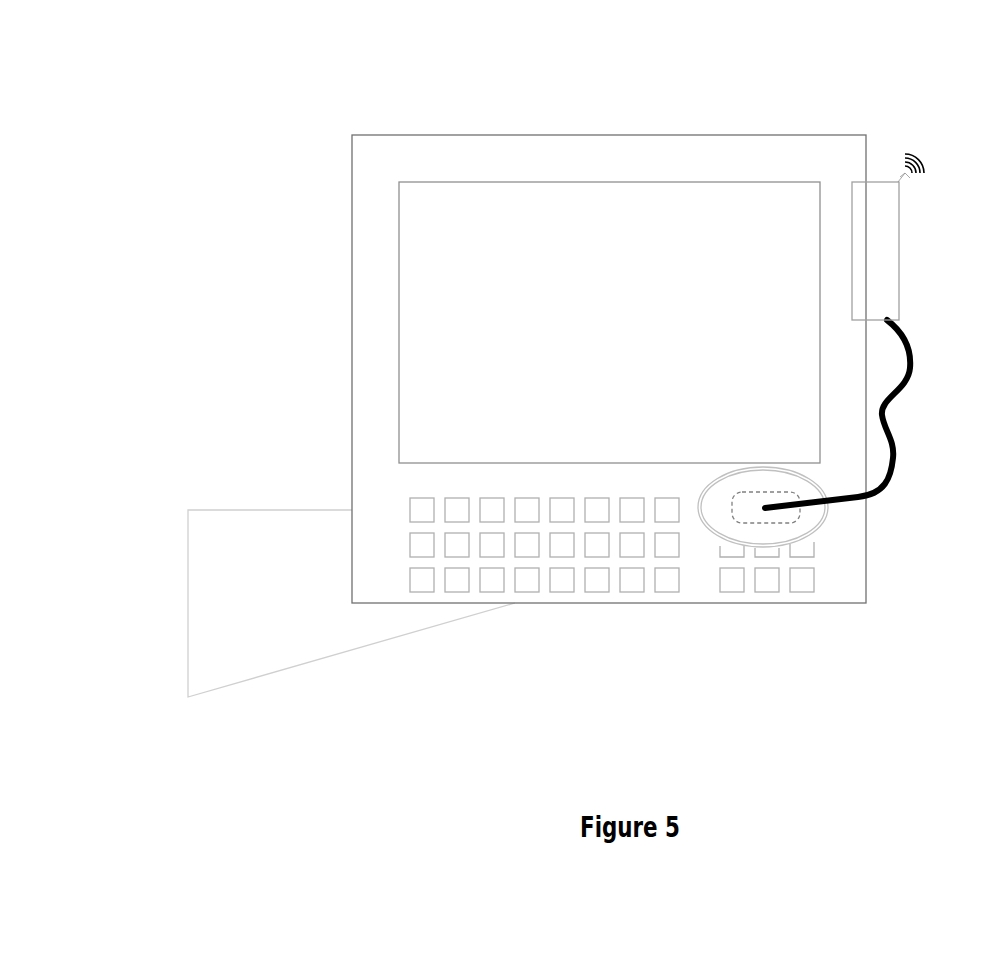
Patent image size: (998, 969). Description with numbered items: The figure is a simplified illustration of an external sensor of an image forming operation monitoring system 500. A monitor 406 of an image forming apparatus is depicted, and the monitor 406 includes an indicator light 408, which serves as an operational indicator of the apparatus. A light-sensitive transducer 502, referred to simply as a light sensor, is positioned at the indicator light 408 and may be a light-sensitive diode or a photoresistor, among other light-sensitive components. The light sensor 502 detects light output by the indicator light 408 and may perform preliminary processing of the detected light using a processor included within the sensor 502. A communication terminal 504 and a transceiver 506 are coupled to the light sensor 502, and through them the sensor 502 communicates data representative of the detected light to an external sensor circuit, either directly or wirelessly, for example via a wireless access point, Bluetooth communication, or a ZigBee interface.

The image forming operation monitoring system 500 is at (186, 110).
The monitor 406 is at (773, 130).
The indicator light 408 is at (768, 486).
The light-sensitive transducer 502 is at (818, 535).
The communication terminal 504 is at (904, 253).
The transceiver 506 is at (914, 144).